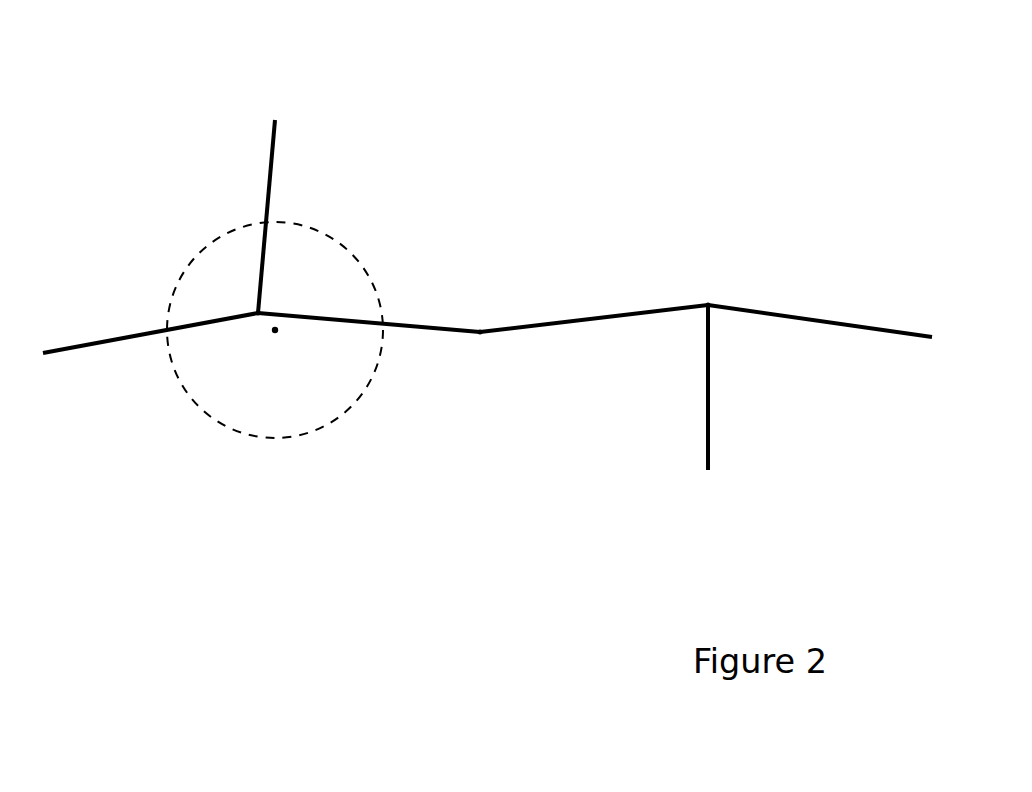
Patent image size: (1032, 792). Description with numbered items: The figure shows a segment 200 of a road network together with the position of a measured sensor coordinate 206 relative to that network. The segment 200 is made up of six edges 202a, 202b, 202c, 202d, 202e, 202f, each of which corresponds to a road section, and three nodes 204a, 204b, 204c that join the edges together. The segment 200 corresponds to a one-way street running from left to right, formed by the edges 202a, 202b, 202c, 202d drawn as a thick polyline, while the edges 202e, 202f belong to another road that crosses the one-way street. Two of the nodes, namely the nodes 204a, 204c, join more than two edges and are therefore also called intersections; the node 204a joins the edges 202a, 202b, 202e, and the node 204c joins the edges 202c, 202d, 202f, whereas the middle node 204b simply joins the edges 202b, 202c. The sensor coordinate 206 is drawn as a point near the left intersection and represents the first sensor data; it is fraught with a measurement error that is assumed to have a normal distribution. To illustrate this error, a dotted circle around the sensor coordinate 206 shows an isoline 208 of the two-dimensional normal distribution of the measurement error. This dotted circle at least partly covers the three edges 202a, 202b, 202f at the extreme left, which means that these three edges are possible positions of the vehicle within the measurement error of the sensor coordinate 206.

The segment 200 is at (476, 246).
The edge 202a is at (145, 337).
The edge 202b is at (428, 333).
The edge 202c is at (598, 322).
The edge 202d is at (842, 325).
The edge 202e is at (273, 175).
The edge 202f is at (710, 430).
The node 204a is at (258, 313).
The node 204b is at (480, 330).
The node 204c is at (708, 305).
The sensor coordinate 206 is at (275, 333).
The isoline 208 is at (325, 425).